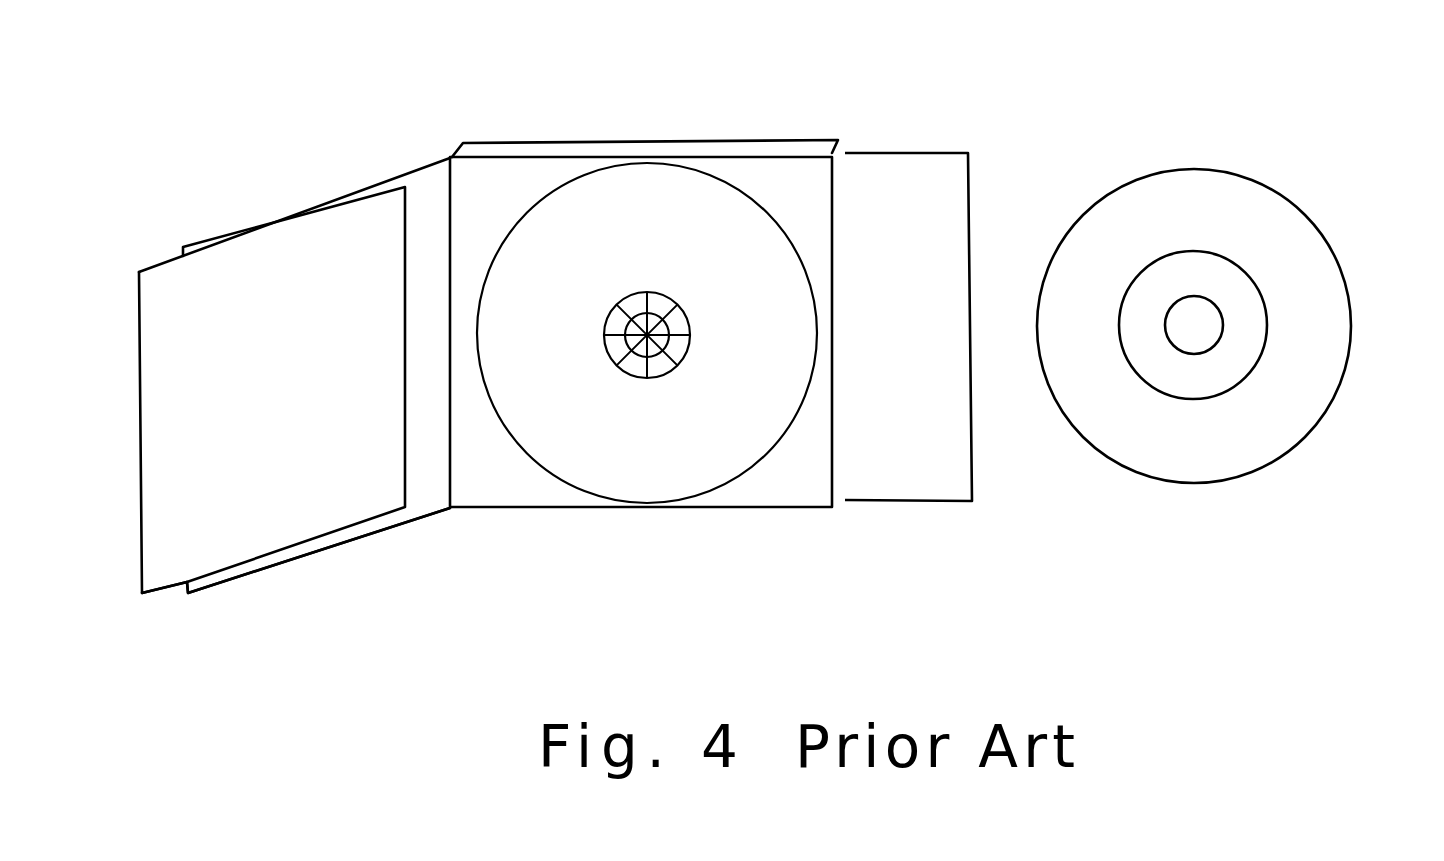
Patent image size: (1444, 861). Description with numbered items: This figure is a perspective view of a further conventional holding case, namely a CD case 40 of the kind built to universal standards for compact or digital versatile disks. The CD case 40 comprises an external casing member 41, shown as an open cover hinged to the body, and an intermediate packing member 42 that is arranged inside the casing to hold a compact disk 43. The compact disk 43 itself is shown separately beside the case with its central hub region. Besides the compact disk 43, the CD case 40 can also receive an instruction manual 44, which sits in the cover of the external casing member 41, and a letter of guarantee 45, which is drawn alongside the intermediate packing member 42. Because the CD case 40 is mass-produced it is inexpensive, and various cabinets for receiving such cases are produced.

The CD case 40 is at (596, 86).
The external casing member 41 is at (377, 182).
The intermediate packing member 42 is at (797, 495).
The compact disk 43 is at (1337, 288).
The instruction manual 44 is at (173, 573).
The letter of guarantee 45 is at (955, 185).